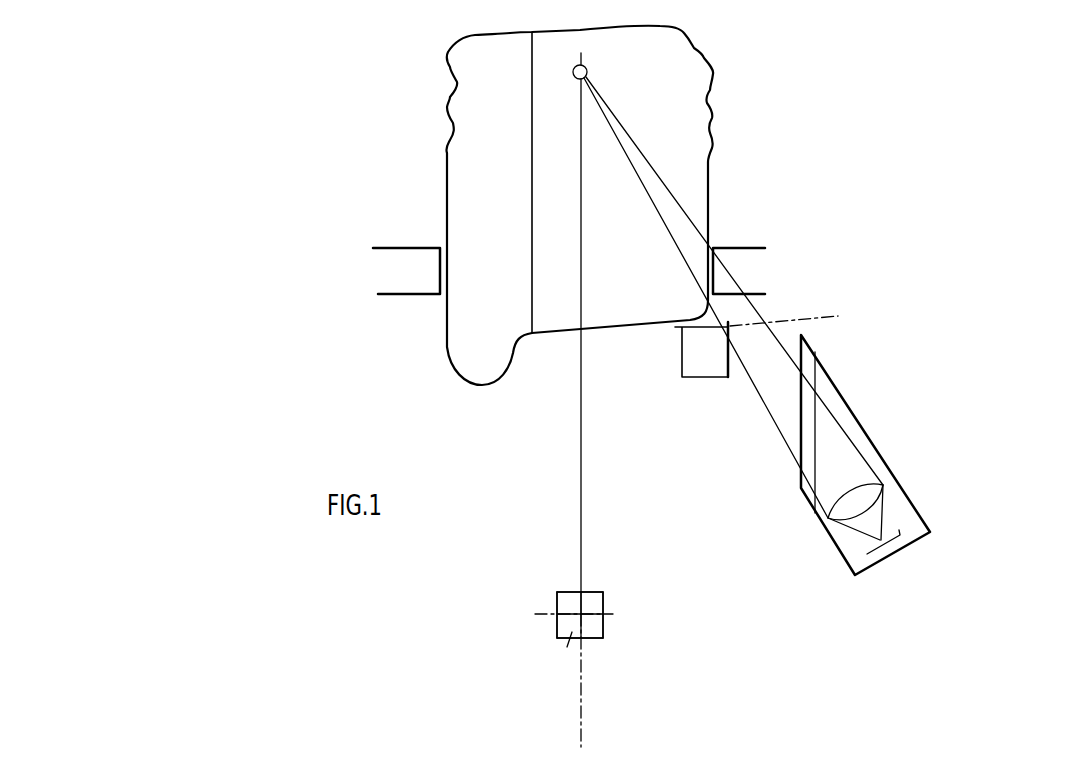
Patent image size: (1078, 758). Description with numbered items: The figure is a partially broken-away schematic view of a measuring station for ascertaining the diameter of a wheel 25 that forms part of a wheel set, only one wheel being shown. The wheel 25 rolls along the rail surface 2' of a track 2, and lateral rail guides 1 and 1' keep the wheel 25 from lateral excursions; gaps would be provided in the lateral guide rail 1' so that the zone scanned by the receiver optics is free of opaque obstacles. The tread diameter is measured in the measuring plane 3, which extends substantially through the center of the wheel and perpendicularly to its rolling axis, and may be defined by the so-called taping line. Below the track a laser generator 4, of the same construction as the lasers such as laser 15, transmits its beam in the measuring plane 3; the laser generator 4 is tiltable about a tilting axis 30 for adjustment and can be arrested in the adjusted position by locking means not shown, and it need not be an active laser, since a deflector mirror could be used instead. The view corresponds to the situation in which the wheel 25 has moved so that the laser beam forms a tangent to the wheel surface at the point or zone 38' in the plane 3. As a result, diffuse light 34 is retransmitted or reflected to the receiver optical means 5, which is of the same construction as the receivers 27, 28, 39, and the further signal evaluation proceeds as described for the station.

The lateral rail guide 1 is at (406, 255).
The lateral rail guide 1' is at (739, 255).
The track 2 is at (696, 368).
The rail surface 2' is at (893, 303).
The measuring plane 3 is at (583, 490).
The laser generator 4 is at (687, 596).
The receiver optical means 5 is at (862, 477).
The laser 15 is at (569, 639).
The wheel 25 is at (458, 201).
The receiver 27 is at (855, 502).
The receiver 28 is at (857, 557).
The tilting axis 30 is at (557, 614).
The diffuse light 34 is at (648, 172).
The point or zone 38' is at (669, 89).
The receiver 39 is at (865, 455).